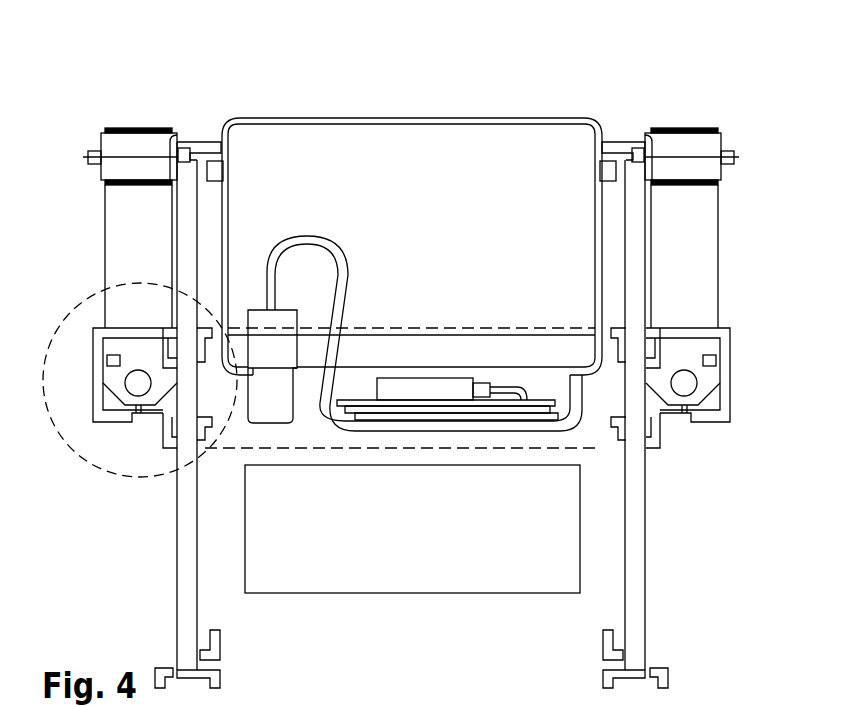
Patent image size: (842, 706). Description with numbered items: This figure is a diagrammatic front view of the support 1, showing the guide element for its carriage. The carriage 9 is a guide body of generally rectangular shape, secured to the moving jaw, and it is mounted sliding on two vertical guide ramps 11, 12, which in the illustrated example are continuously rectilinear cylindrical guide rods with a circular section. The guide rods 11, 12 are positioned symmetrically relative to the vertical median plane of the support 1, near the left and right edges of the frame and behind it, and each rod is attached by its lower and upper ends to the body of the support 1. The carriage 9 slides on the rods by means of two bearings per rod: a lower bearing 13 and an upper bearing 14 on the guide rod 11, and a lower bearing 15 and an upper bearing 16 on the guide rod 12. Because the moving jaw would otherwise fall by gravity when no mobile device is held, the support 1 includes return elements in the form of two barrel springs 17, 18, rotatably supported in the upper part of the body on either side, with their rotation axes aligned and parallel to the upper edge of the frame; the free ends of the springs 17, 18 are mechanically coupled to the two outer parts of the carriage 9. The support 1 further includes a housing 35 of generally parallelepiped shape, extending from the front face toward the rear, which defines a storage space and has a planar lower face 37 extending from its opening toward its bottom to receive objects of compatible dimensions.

The support 1 is at (580, 92).
The carriage 9 is at (100, 402).
The guide ramp 11 is at (185, 593).
The guide ramp 12 is at (635, 608).
The lower bearing 13 is at (163, 430).
The upper bearing 14 is at (168, 348).
The lower bearing 15 is at (652, 430).
The upper bearing 16 is at (650, 348).
The barrel spring 17 is at (128, 242).
The barrel spring 18 is at (673, 222).
The housing 35 is at (411, 274).
The planar lower face 37 is at (455, 330).